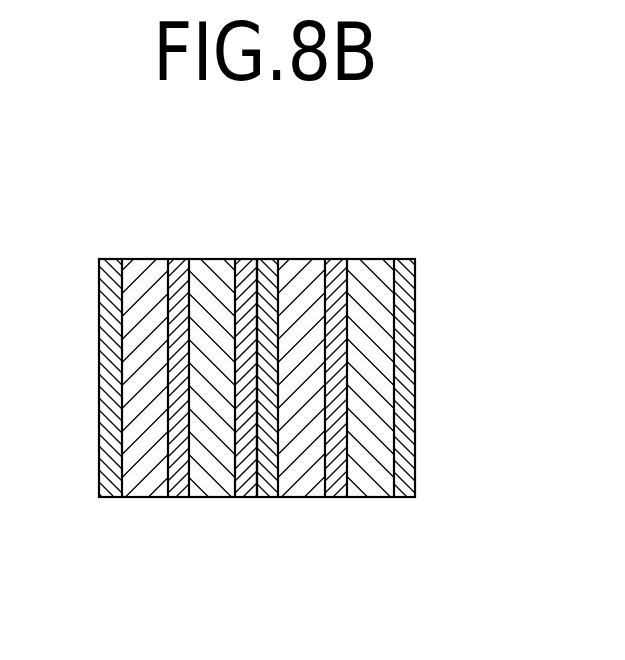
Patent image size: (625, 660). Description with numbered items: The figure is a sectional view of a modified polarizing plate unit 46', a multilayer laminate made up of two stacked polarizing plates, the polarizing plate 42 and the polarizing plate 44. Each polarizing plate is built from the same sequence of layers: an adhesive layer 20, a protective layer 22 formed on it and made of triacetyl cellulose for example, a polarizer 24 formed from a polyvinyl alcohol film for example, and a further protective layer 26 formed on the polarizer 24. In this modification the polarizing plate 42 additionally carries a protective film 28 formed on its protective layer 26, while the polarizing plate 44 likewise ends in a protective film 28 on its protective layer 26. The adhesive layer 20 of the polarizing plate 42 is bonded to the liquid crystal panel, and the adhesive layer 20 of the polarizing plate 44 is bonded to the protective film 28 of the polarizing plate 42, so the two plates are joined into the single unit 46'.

The adhesive layer 20 is at (92, 497).
The protective layer 22 is at (127, 497).
The polarizer 24 is at (166, 497).
The protective layer 26 is at (203, 497).
The protective film 28 is at (240, 497).
The polarizing plate 42 is at (247, 575).
The polarizing plate 44 is at (472, 585).
The polarizing plate unit 46' is at (257, 330).